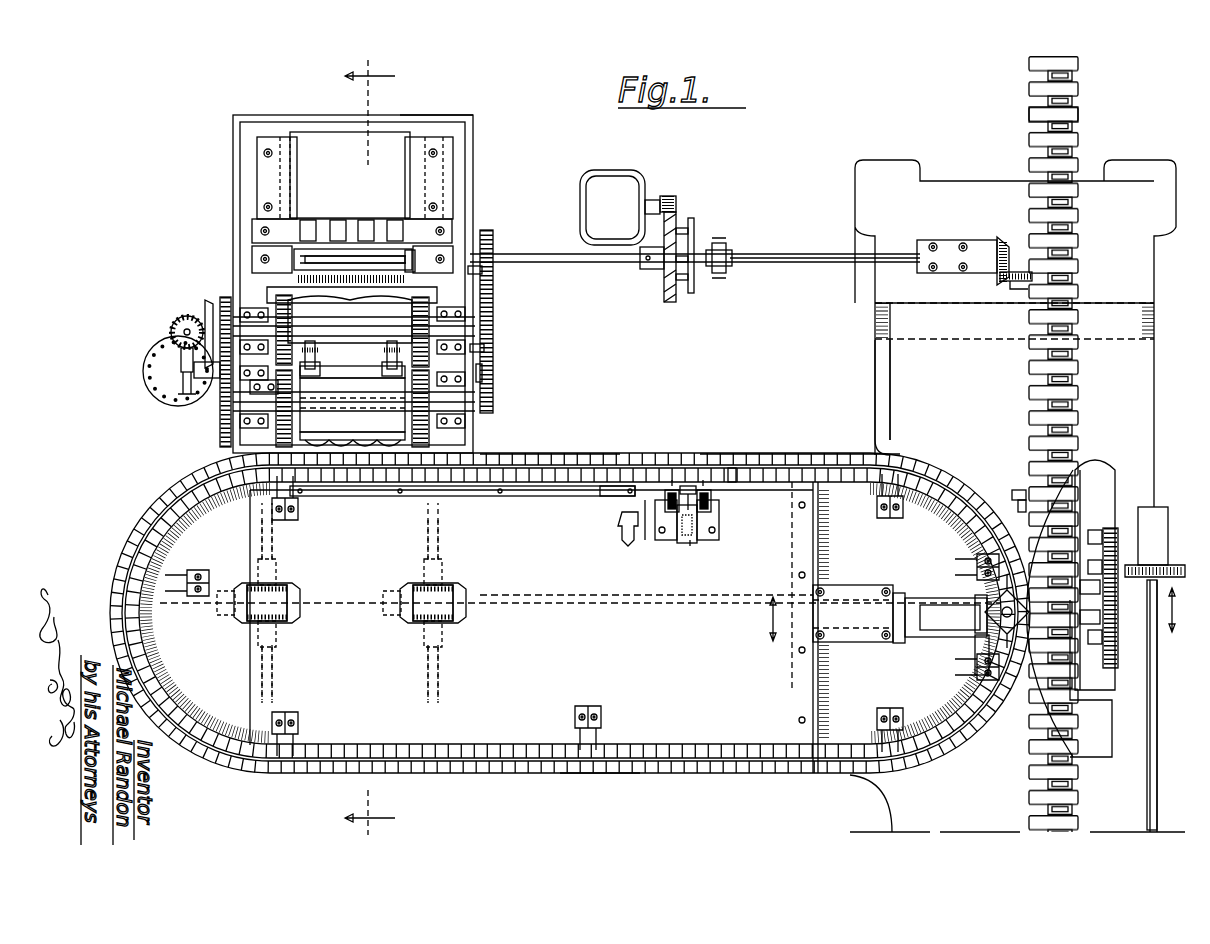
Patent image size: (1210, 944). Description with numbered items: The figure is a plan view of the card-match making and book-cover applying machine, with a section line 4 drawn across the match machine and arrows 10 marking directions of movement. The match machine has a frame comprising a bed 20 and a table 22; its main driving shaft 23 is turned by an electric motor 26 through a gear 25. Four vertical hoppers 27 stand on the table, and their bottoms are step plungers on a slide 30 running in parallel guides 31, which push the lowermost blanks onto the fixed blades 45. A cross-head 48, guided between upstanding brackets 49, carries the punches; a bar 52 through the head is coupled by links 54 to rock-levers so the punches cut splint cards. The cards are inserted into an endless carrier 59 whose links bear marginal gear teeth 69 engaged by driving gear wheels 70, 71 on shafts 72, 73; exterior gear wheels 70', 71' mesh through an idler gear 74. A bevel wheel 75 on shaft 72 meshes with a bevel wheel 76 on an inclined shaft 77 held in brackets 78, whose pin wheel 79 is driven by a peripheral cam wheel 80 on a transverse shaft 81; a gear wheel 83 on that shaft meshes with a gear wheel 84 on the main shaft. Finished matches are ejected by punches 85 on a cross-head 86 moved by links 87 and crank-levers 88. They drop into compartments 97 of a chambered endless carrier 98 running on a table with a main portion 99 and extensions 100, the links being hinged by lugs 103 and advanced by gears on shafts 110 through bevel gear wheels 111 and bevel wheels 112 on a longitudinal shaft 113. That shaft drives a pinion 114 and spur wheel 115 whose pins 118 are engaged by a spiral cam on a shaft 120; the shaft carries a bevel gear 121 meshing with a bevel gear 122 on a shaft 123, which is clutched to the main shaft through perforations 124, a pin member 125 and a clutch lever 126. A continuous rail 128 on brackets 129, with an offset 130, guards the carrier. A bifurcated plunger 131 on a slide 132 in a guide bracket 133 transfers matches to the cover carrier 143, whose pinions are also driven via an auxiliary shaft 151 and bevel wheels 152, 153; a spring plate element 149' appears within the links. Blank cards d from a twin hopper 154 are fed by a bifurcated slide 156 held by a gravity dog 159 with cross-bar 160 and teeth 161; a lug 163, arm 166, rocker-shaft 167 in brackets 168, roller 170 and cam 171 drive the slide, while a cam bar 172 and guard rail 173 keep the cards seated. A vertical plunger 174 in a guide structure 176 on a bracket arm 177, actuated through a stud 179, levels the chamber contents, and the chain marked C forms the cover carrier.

The section line 4 is at (388, 74).
The direction arrow 10 is at (976, 614).
The bed 20 is at (232, 132).
The table 22 is at (468, 115).
The main driving shaft 23 is at (510, 254).
The gear 25 is at (668, 196).
The electric motor 26 is at (620, 207).
The vertical hoppers 27 is at (306, 218).
The slide 30 is at (315, 130).
The parallel guides 31 is at (265, 158).
The blades 45 is at (482, 274).
The cross-head 48 is at (340, 252).
The upstanding brackets 49 is at (418, 254).
The bar 52 is at (353, 260).
The links 54 is at (270, 253).
The endless carrier 59 is at (300, 302).
The marginal gear teeth 69 is at (428, 300).
The driving gear wheel 70 is at (376, 371).
The gear wheel 70' is at (337, 318).
The driving gear wheel 71 is at (352, 403).
The gear wheel 71' is at (206, 382).
The shaft 72 is at (475, 325).
The shaft 73 is at (370, 394).
The idler gear 74 is at (205, 375).
The bevel wheel 75 is at (206, 303).
The bevel wheel 76 is at (180, 322).
The inclined shaft 77 is at (186, 332).
The brackets 78 is at (180, 360).
The pin wheel 79 is at (143, 352).
The peripheral cam wheel 80 is at (185, 390).
The transverse shaft 81 is at (484, 344).
The gear wheel 83 is at (482, 374).
The gear wheel 84 is at (486, 232).
The ejecting punches 85 is at (430, 422).
The cross-head 86 is at (352, 405).
The links 87 is at (315, 354).
The crank-levers 88 is at (392, 341).
The compartments 97 is at (793, 454).
The endless carrier 98 is at (774, 482).
The main portion 99 is at (537, 627).
The extensions 100 is at (570, 613).
The lugs 103 is at (605, 774).
The shafts 110 is at (438, 522).
The bevel gear wheels 111 is at (290, 580).
The bevel wheel 112 is at (235, 625).
The longitudinally-extending shaft 113 is at (566, 594).
The pinion 114 is at (1110, 544).
The spur wheel 115 is at (1115, 530).
The pins 118 is at (1096, 530).
The shaft 120 is at (1035, 784).
The bevel gear 121 is at (1100, 280).
The bevel gear 122 is at (1000, 236).
The shaft 123 is at (797, 254).
The perforations 124 is at (672, 224).
The pin member 125 is at (694, 235).
The clutch lever 126 is at (720, 274).
The continuous rail 128 is at (558, 454).
The brackets 129 is at (895, 470).
The offset 130 is at (370, 496).
The bifurcated plunger 131 is at (930, 632).
The slide 132 is at (898, 596).
The guide bracket 133 is at (839, 585).
The endless carrier 143 is at (1040, 118).
The gear 149' is at (1110, 635).
The auxiliary shaft 151 is at (1150, 792).
The bevel wheel 152 is at (1170, 567).
The bevel wheel 153 is at (1157, 605).
The twin hopper 154 is at (645, 542).
The bifurcated slide 156 is at (694, 544).
The gravity dog 159 is at (657, 540).
The cross-bar 160 is at (688, 486).
The teeth 161 is at (672, 490).
The lug 163 is at (687, 546).
The upstanding arm 166 is at (718, 538).
The rocker-shaft 167 is at (783, 504).
The brackets 168 is at (618, 530).
The roller 170 is at (1020, 502).
The cam 171 is at (1015, 490).
The cam bar 172 is at (593, 498).
The guard rail 173 is at (733, 454).
The vertically-reciprocative plunger 174 is at (985, 605).
The guide structure 176 is at (975, 676).
The bracket arm 177 is at (1050, 486).
The stud 179 is at (975, 634).
The chain C is at (1028, 134).
The supplemental blank cards d is at (672, 484).